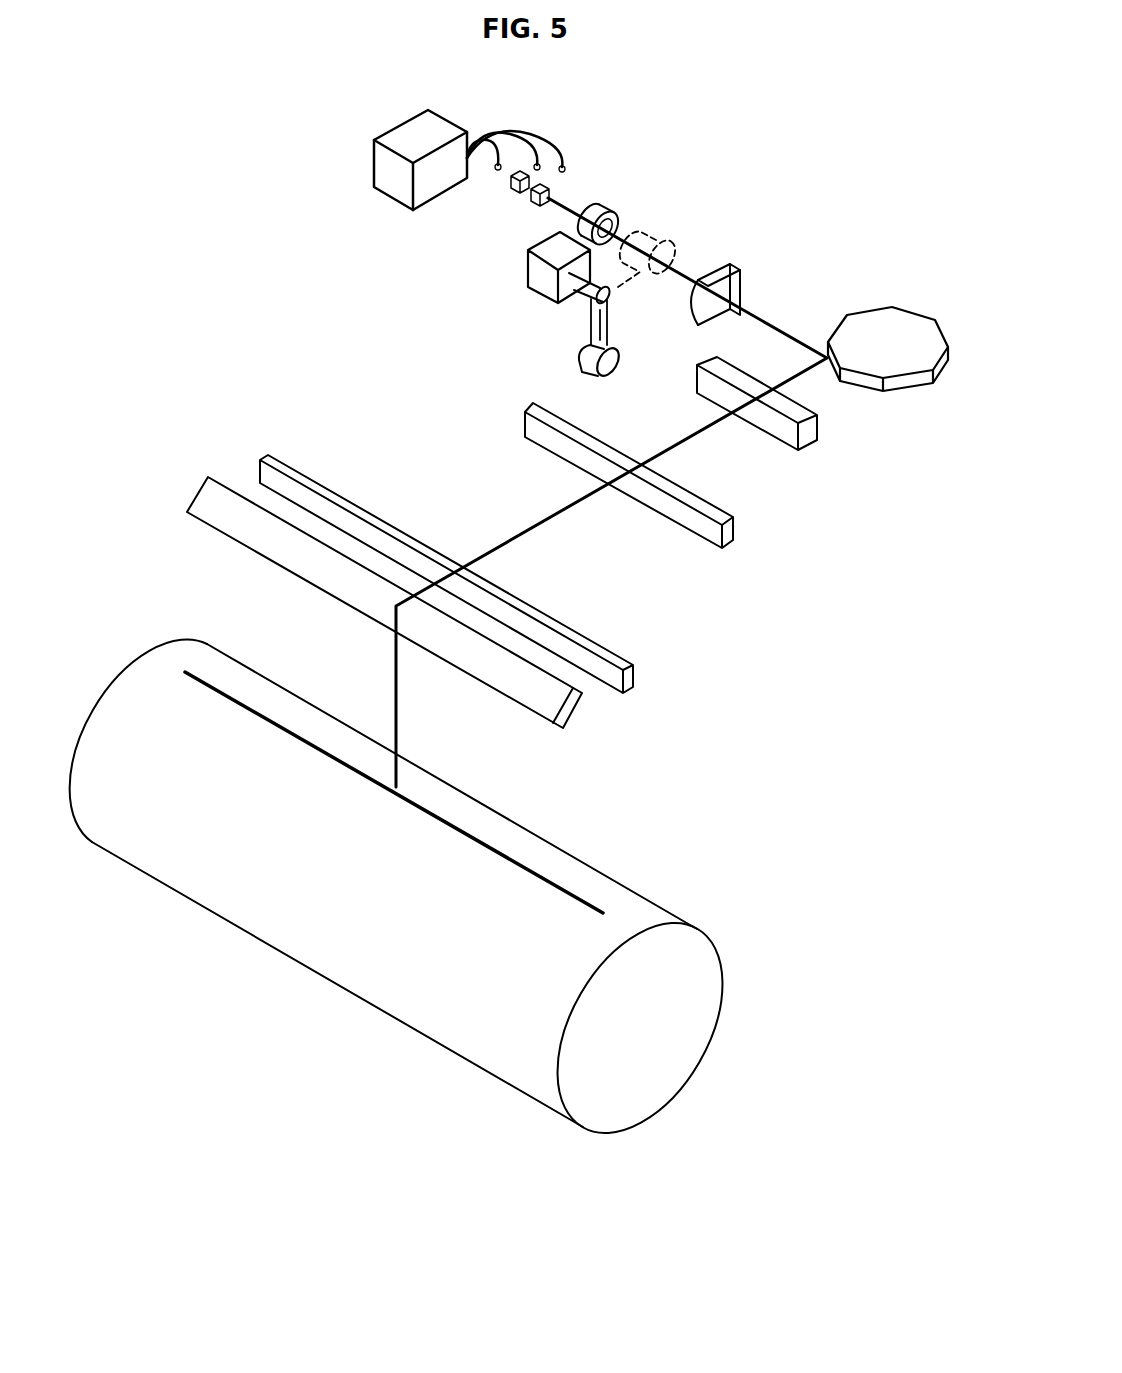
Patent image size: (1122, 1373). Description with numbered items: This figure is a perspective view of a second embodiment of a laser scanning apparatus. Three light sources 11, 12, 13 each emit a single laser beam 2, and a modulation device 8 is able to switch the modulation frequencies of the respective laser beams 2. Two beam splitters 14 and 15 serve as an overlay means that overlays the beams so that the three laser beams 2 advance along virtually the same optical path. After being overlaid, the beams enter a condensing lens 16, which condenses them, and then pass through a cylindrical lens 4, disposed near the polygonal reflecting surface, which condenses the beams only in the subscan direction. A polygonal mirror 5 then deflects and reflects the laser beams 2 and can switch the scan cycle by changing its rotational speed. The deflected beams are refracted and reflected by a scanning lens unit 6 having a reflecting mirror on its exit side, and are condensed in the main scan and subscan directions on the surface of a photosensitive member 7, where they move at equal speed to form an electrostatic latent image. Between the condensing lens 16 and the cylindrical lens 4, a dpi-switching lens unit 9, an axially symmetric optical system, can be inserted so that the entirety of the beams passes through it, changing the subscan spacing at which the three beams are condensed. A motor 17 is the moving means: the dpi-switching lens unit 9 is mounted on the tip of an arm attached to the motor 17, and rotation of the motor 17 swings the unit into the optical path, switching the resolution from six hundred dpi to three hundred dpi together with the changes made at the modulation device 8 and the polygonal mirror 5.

The laser beam 2 is at (572, 202).
The cylindrical lens 4 is at (735, 288).
The polygonal mirror 5 is at (910, 317).
The scanning lens unit 6 is at (810, 440).
The photosensitive member 7 is at (572, 868).
The modulation device 8 is at (400, 128).
The dpi-switching lens unit 9 is at (578, 358).
The light source 11 is at (498, 158).
The light source 12 is at (540, 162).
The light source 13 is at (565, 168).
The beam splitter 14 is at (513, 188).
The beam splitter 15 is at (533, 204).
The condensing lens 16 is at (620, 222).
The motor 17 is at (543, 288).